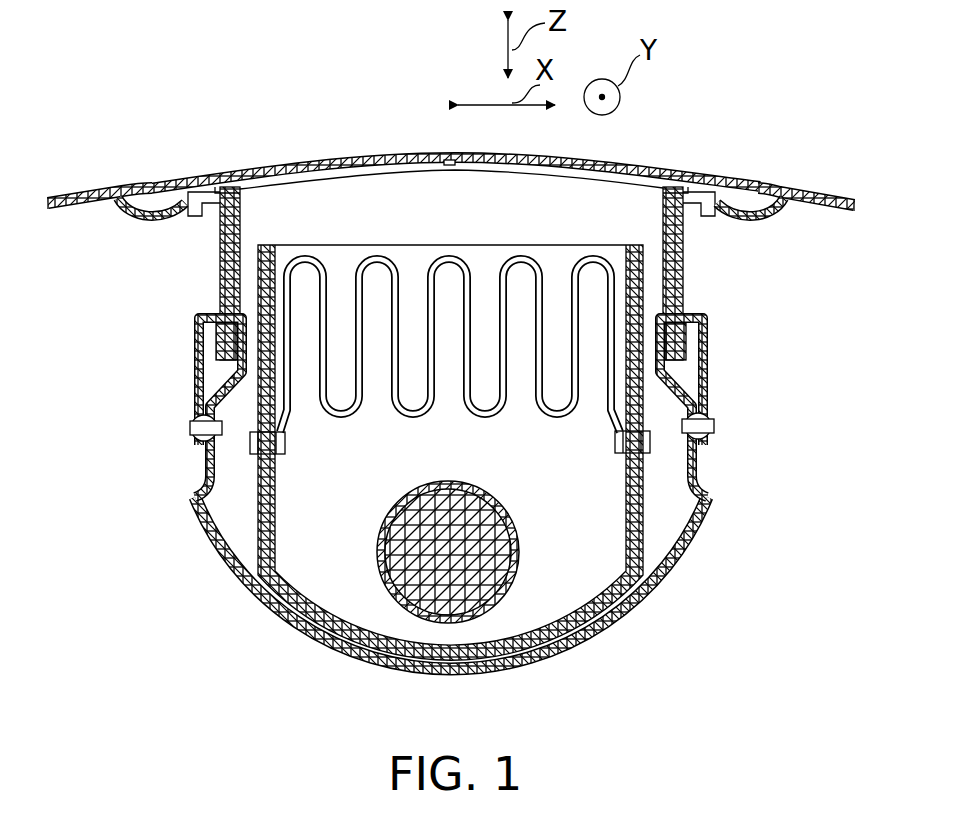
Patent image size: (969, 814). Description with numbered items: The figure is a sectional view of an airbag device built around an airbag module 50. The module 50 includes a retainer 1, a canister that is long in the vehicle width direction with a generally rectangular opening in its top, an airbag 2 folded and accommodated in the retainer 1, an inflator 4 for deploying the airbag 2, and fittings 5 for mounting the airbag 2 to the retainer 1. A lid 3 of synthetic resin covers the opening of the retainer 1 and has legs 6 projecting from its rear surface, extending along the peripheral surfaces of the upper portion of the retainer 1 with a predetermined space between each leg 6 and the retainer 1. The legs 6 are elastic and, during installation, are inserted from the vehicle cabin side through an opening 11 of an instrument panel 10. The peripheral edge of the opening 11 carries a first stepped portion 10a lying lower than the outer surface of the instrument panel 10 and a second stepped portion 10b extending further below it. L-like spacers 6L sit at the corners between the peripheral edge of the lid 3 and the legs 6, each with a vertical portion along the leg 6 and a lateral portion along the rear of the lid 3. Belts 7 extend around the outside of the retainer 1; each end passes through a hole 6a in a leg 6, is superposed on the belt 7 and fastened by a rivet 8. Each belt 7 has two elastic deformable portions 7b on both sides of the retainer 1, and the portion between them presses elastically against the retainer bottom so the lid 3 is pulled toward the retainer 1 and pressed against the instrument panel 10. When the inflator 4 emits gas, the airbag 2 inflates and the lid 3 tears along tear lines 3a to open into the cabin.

The retainer 1 is at (652, 518).
The airbag 2 is at (508, 415).
The lid 3 is at (383, 155).
The tear lines 3a is at (450, 166).
The inflator 4 is at (519, 546).
The fittings 5 is at (286, 446).
The legs 6 is at (242, 212).
The L-like spacers 6L is at (212, 186).
The holes 6a is at (218, 305).
The belt 7 is at (708, 470).
The elastic deformable portions 7b is at (186, 497).
The rivet 8 is at (190, 432).
The instrument panel 10 is at (828, 178).
The first stepped portion 10a is at (152, 216).
The second stepped portion 10b is at (183, 225).
The opening 11 is at (716, 249).
The airbag module 50 is at (518, 616).